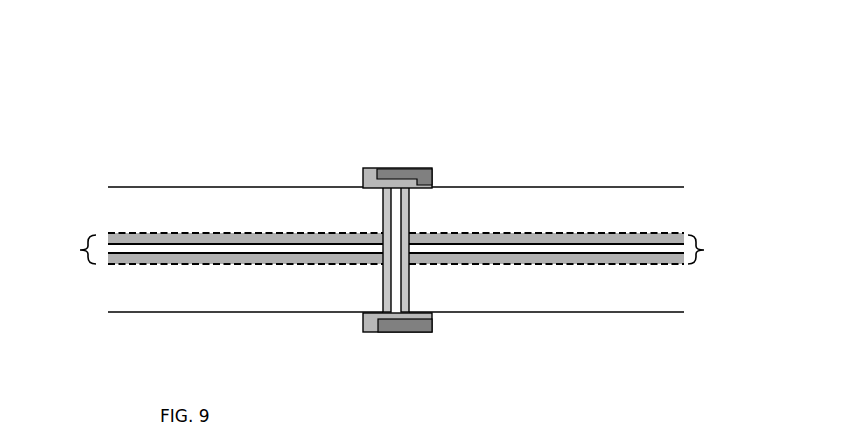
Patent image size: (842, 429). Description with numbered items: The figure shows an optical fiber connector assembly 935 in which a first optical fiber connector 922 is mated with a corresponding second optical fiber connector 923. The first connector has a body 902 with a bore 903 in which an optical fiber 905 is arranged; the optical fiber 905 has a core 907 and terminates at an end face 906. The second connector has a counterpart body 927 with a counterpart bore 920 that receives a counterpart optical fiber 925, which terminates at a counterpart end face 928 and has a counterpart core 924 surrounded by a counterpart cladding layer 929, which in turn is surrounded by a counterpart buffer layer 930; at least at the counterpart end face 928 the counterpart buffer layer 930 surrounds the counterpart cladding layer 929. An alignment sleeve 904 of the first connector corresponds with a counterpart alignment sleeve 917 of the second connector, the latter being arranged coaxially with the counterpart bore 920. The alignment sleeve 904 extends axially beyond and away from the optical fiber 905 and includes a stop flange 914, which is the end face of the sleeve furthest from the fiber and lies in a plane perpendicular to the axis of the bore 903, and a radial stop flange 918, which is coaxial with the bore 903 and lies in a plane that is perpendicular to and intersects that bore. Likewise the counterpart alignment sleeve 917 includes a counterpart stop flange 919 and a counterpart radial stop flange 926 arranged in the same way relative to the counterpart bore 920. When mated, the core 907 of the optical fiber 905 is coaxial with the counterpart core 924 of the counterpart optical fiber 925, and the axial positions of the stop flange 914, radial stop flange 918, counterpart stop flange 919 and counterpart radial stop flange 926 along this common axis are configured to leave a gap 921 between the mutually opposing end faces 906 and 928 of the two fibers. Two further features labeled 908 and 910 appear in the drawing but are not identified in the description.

The body 902 is at (122, 294).
The bore 903 is at (187, 276).
The alignment sleeve 904 is at (368, 355).
The optical fiber 905 is at (80, 250).
The end face 906 is at (442, 205).
The core 907 is at (243, 247).
The second electrode layer 908 is at (296, 259).
The light path 910 is at (153, 169).
The stop flange 914 is at (451, 351).
The counterpart alignment sleeve 917 is at (432, 362).
The radial stop flange 918 is at (374, 362).
The counterpart stop flange 919 is at (357, 344).
The counterpart bore 920 is at (637, 275).
The gap 921 is at (450, 225).
The first optical fiber connector 922 is at (249, 187).
The second optical fiber connector 923 is at (558, 187).
The counterpart core 924 is at (568, 247).
The counterpart optical fiber 925 is at (704, 250).
The counterpart radial stop flange 926 is at (411, 344).
The counterpart body 927 is at (672, 298).
The counterpart end face 928 is at (396, 152).
The counterpart cladding layer 929 is at (591, 257).
The counterpart buffer layer 930 is at (618, 267).
The optical fiber connector assembly 935 is at (238, 162).